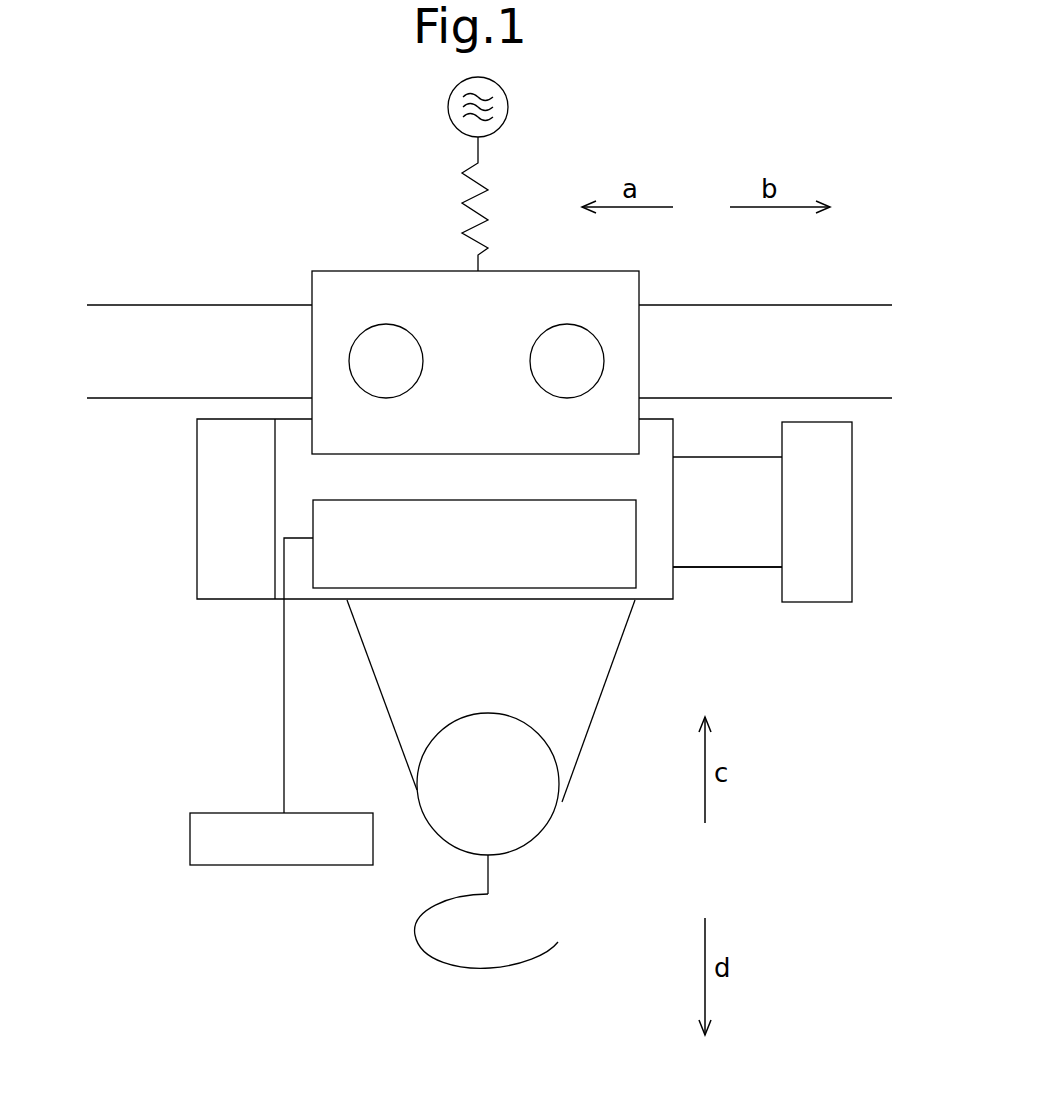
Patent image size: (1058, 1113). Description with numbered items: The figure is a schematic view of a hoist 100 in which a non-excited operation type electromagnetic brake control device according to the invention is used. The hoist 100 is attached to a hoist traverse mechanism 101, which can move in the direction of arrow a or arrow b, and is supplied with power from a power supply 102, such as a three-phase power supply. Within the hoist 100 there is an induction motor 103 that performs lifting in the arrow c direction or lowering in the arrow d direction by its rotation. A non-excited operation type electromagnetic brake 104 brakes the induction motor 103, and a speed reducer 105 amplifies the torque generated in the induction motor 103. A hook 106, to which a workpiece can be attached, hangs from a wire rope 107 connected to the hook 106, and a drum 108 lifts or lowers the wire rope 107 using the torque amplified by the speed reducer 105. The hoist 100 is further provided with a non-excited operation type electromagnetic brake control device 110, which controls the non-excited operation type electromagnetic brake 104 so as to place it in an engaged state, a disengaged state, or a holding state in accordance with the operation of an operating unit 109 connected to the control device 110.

The hoist 100 is at (257, 615).
The hoist traverse mechanism 101 is at (350, 250).
The power supply 102 is at (509, 98).
The induction motor 103 is at (712, 567).
The non-excited operation type electromagnetic brake 104 is at (838, 523).
The speed reducer 105 is at (197, 560).
The hook 106 is at (560, 802).
The wire rope 107 is at (375, 675).
The drum 108 is at (673, 440).
The operating unit 109 is at (280, 866).
The non-excited operation type electromagnetic brake control device 110 is at (568, 500).